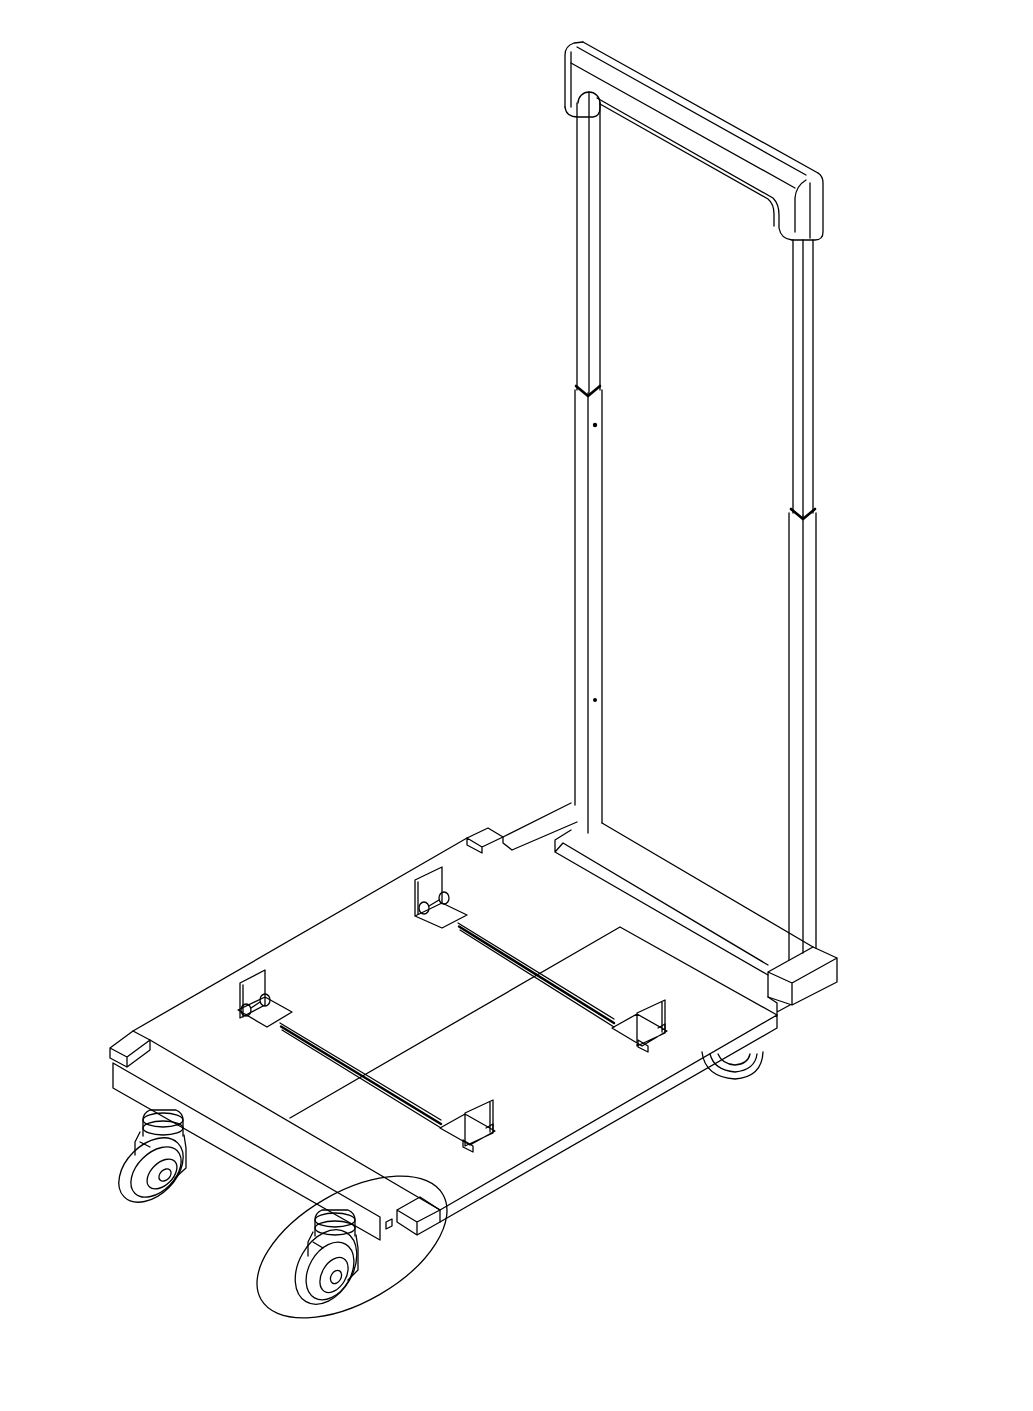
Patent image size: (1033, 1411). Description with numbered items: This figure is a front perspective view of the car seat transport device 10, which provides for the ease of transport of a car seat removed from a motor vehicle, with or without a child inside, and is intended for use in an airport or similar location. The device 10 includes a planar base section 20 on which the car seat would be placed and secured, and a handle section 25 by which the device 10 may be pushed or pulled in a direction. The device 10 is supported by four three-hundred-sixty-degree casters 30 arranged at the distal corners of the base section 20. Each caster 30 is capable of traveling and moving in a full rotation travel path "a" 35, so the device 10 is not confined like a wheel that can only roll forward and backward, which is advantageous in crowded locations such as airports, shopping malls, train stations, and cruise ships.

The car seat transport device 10 is at (113, 178).
The base section 20 is at (518, 778).
The handle section 25 is at (513, 812).
The caster 30 is at (738, 1068).
The full rotation travel path 35 is at (423, 1256).